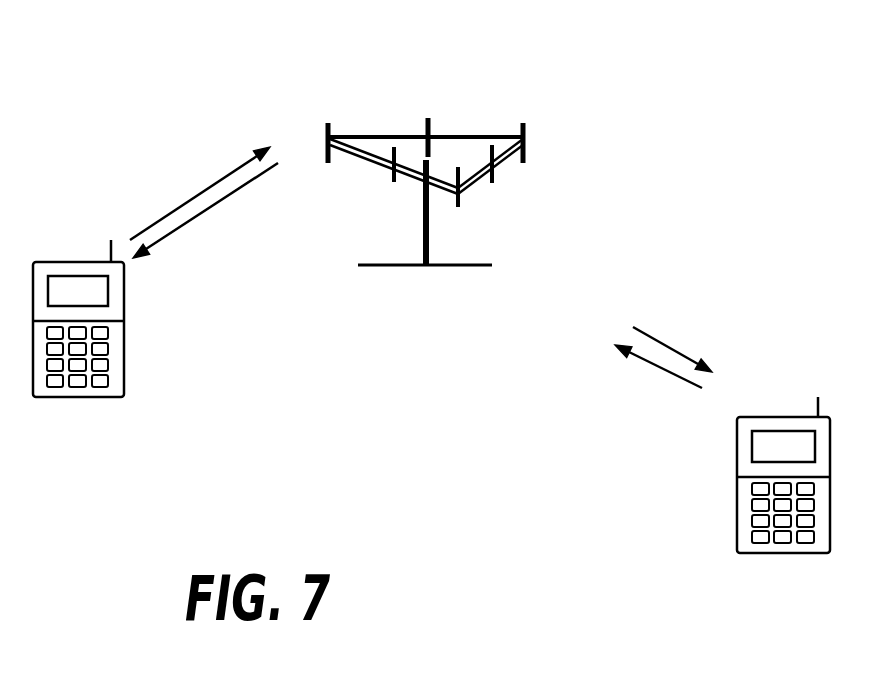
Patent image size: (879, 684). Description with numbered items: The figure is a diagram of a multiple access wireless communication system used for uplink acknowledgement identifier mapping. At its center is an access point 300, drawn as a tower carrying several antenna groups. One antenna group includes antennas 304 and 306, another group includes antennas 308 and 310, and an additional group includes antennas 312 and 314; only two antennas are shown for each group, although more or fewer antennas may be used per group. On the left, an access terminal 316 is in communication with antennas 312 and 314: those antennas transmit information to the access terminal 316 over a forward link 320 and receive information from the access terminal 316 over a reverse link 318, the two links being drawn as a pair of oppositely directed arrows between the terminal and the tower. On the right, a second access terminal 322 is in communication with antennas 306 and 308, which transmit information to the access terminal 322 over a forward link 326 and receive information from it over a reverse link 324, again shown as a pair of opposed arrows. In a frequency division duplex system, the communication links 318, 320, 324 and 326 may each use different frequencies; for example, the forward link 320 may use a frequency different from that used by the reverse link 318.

The access point 300 is at (422, 267).
The antenna 304 is at (465, 195).
The antenna 306 is at (495, 178).
The antenna 308 is at (530, 155).
The antenna 310 is at (428, 130).
The antenna 312 is at (333, 133).
The antenna 314 is at (396, 178).
The access terminal 316 is at (98, 258).
The reverse link 318 is at (200, 197).
The forward link 320 is at (215, 205).
The access terminal 322 is at (765, 415).
The reverse link 324 is at (647, 357).
The forward link 326 is at (680, 352).